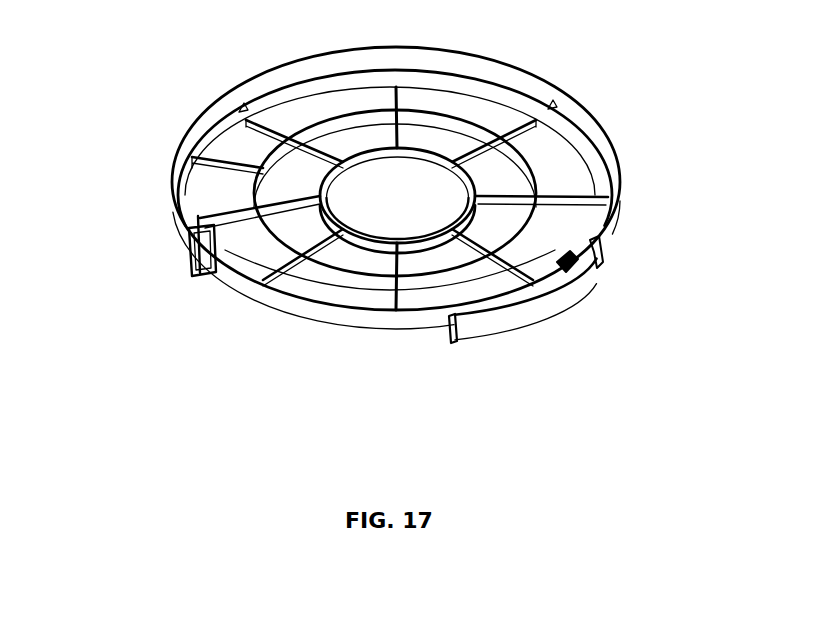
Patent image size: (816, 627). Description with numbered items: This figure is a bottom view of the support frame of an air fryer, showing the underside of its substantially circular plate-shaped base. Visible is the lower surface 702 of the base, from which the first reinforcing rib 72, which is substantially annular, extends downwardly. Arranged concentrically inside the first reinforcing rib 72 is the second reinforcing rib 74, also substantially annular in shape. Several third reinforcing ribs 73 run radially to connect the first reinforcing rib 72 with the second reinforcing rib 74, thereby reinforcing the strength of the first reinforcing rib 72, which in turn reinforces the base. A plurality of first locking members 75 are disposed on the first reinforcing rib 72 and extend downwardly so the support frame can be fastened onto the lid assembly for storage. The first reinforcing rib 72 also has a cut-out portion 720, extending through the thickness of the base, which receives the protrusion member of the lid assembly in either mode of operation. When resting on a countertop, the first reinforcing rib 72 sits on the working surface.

The first reinforcing rib 72 is at (450, 80).
The lower surface 702 is at (293, 110).
The cut-out portion 720 is at (257, 310).
The third reinforcing rib 73 is at (573, 197).
The second reinforcing rib 74 is at (367, 287).
The first locking member 75 is at (568, 262).